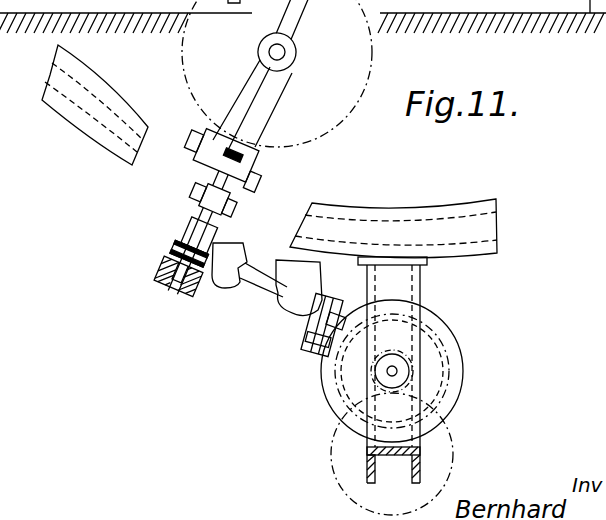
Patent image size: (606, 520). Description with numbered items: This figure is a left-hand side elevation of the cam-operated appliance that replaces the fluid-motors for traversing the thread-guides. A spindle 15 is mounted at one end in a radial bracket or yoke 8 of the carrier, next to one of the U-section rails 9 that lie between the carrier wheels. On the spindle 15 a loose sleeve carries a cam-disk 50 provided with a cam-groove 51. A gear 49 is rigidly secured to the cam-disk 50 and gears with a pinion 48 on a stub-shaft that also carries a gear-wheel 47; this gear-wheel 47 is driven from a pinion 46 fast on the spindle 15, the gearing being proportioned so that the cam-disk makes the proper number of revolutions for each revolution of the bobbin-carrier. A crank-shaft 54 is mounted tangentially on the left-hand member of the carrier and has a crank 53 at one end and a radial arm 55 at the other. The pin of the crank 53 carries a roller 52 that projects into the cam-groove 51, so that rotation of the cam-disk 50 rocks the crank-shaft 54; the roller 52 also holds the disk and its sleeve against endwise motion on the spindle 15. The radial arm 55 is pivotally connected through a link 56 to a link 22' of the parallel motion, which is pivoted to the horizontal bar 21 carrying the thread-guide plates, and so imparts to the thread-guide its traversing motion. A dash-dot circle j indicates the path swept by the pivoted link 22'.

The pivot circle path j is at (340, 128).
The rail 9 is at (269, 151).
The link 22' is at (268, 75).
The link 56 is at (200, 188).
The radial arm 55 is at (203, 220).
The horizontal bar 21 is at (183, 297).
The crank-shaft 54 is at (258, 296).
The crank 53 is at (300, 323).
The roller 52 is at (340, 308).
The radial bracket or yoke 8 is at (407, 288).
The pinion 48 is at (388, 480).
The gear 49 is at (462, 387).
The cam-disk 50 is at (348, 400).
The cam-groove 51 is at (327, 428).
The pinion 46 is at (410, 358).
The spindle 15 is at (412, 372).
The gear-wheel 47 is at (455, 466).